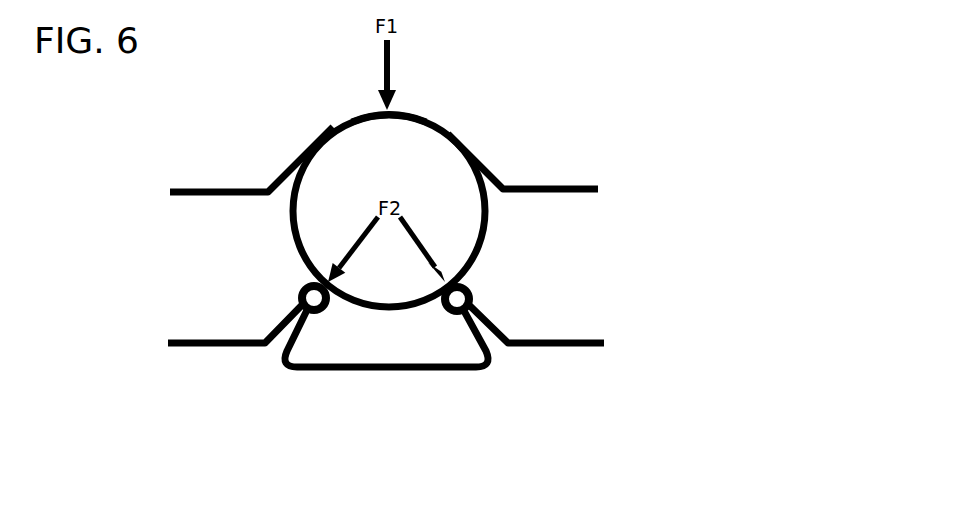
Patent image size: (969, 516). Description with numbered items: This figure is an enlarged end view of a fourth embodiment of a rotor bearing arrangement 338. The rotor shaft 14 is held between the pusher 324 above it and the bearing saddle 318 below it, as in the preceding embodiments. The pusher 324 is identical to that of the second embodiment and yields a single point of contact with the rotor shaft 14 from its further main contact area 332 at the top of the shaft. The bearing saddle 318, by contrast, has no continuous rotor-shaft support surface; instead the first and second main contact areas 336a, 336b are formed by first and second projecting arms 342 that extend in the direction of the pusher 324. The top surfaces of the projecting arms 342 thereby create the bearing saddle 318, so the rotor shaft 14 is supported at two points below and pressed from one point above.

The rotor shaft 14 is at (488, 225).
The bearing saddle 318 is at (403, 386).
The pusher 324 is at (229, 136).
The further main contact area 332 is at (374, 110).
The first main contact area 336a is at (318, 292).
The second main contact area 336b is at (458, 294).
The rotor bearing arrangement 338 is at (440, 113).
The projecting arms 342 is at (300, 339).